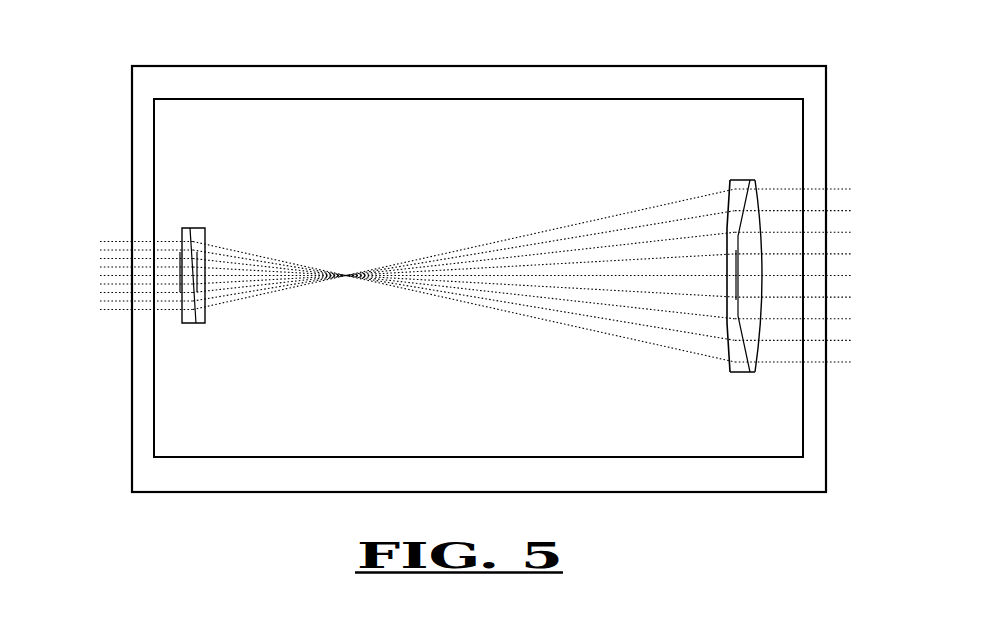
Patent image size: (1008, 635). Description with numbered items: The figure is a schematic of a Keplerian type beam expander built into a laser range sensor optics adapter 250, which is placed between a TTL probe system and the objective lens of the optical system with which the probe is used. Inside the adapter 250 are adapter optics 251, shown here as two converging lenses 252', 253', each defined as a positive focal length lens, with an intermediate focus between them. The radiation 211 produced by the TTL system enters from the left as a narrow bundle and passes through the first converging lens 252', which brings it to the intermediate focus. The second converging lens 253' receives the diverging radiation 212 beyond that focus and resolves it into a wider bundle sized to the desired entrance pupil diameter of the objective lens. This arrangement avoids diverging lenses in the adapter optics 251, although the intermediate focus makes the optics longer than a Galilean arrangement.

The laser range sensor optics adapter 250 is at (325, 65).
The adapter optics 251 is at (254, 99).
The radiation 211 is at (113, 293).
The diverged radiation 212 is at (847, 357).
The first converging lens 252' is at (188, 394).
The second converging lens 253' is at (753, 379).